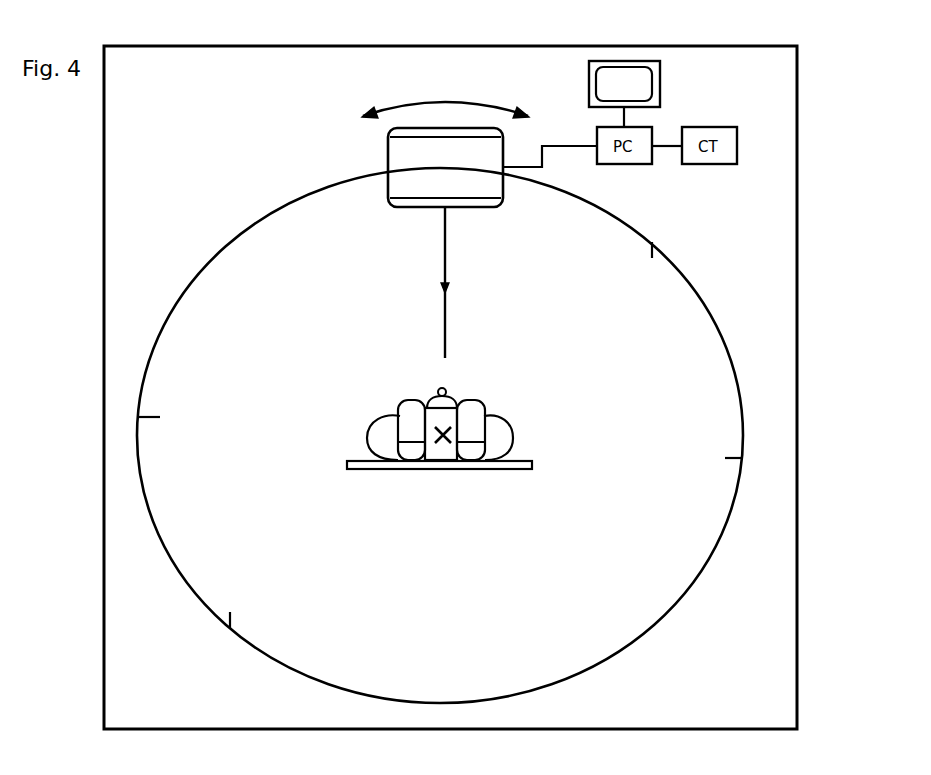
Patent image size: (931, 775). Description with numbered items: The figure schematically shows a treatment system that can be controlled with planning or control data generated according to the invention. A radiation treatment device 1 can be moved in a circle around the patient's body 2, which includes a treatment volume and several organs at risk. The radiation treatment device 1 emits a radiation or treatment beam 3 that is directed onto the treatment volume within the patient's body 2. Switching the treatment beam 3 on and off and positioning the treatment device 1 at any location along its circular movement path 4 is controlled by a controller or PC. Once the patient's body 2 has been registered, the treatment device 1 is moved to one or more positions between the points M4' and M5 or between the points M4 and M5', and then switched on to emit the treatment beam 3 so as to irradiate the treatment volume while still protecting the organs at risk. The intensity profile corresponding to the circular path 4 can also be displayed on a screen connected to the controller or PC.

The radiation treatment device 1 is at (403, 160).
The patient's body 2 is at (513, 427).
The treatment beam 3 is at (445, 253).
The circular movement path 4 is at (627, 647).
The point M4 is at (651, 259).
The point M4' is at (238, 614).
The point M5 is at (162, 420).
The point M5' is at (720, 460).